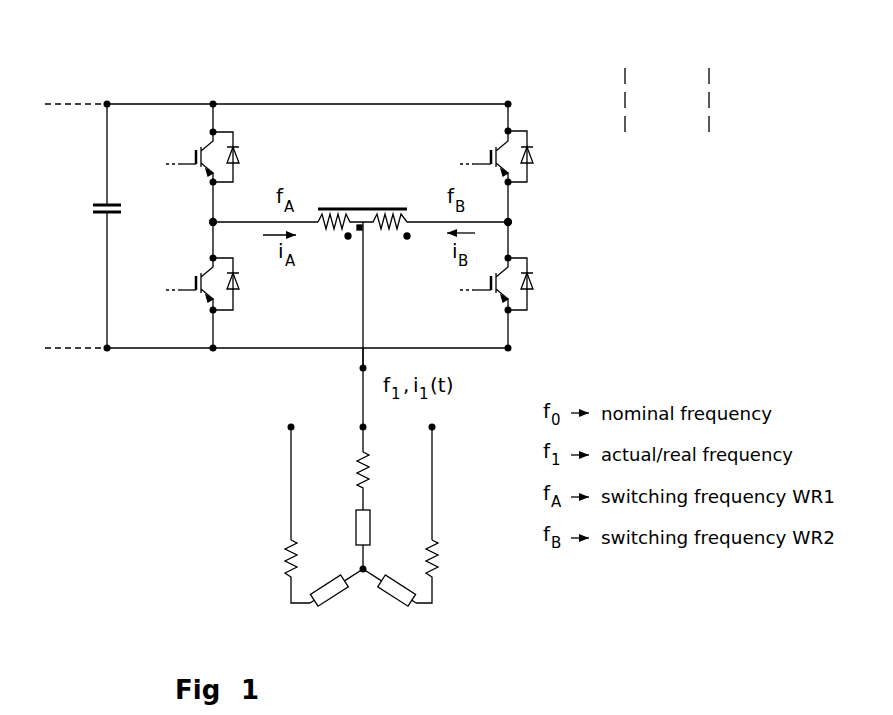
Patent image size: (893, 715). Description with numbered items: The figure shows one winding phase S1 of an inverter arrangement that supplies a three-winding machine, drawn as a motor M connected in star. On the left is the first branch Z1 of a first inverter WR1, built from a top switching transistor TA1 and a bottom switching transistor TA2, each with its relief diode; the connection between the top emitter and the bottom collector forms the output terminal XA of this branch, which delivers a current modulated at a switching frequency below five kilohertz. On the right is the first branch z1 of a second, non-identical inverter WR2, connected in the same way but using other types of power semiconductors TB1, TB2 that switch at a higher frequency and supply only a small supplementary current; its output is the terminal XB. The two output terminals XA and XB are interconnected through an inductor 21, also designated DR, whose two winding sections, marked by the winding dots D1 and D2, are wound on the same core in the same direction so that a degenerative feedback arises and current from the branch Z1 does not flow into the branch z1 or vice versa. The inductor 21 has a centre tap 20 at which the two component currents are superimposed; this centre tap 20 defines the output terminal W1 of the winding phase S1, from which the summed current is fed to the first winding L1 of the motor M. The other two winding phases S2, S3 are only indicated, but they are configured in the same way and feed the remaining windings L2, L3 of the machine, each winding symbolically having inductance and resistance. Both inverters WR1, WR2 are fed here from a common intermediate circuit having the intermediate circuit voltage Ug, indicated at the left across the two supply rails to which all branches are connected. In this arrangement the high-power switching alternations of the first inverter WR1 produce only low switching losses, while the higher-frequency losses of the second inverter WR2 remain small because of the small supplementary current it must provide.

The centre tap 20 is at (359, 230).
The inductor 21 is at (391, 193).
The first inverter WR1 is at (199, 198).
The second inverter WR2 is at (521, 203).
The top switching transistor TA1 is at (199, 163).
The bottom switching transistor TA2 is at (199, 290).
The power semiconductor TB1 is at (521, 156).
The power semiconductor TB2 is at (521, 284).
The first branch of the first inverter Z1 is at (252, 146).
The first branch of the second inverter z1 is at (468, 147).
The winding phase S1 is at (387, 86).
The winding phase S2 is at (624, 75).
The winding phase S3 is at (712, 75).
The output terminal XA is at (197, 223).
The output terminal XB is at (527, 223).
The inductor DR is at (365, 186).
The first choke winding dot D1 is at (332, 253).
The second choke winding dot D2 is at (396, 253).
The output terminal W1 is at (350, 368).
The first winding L1 is at (346, 410).
The winding L2 is at (273, 478).
The winding L3 is at (450, 478).
The motor M is at (363, 565).
The intermediate circuit voltage Ug is at (80, 280).